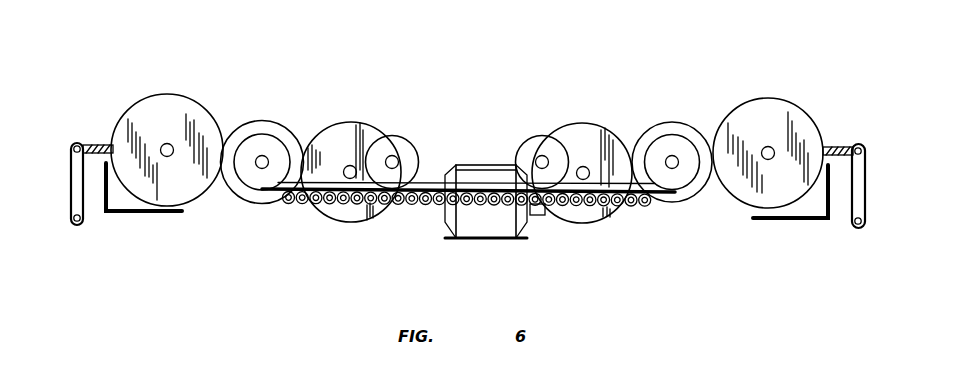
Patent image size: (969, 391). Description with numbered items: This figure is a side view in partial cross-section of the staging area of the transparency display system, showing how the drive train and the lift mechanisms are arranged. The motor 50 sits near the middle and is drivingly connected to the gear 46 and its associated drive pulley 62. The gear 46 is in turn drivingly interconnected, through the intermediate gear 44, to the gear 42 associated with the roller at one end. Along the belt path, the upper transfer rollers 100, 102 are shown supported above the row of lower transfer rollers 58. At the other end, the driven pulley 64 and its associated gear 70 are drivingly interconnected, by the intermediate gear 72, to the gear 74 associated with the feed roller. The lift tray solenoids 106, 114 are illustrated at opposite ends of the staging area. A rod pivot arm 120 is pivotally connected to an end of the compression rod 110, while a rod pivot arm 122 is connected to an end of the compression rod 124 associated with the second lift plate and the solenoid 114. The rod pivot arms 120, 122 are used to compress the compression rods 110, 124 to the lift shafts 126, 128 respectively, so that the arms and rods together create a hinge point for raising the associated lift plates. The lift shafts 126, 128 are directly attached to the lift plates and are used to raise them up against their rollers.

The gear 42 is at (775, 120).
The intermediate gear 44 is at (648, 137).
The gear 46 is at (587, 130).
The motor 50 is at (468, 171).
The lower transfer rollers 58 is at (413, 207).
The drive pulley 62 is at (677, 143).
The driven pulley 64 is at (257, 140).
The gear 70 is at (287, 135).
The intermediate gear 72 is at (343, 132).
The gear 74 is at (145, 132).
The upper transfer roller 100 is at (538, 143).
The upper transfer roller 102 is at (393, 142).
The lift tray solenoid 106 is at (780, 222).
The compression rod 110 is at (842, 147).
The lift solenoid 114 is at (170, 216).
The rod pivot arm 120 is at (867, 173).
The rod pivot arm 122 is at (75, 165).
The compression rod 124 is at (95, 143).
The lift shaft 126 is at (857, 228).
The lift shaft 128 is at (83, 224).